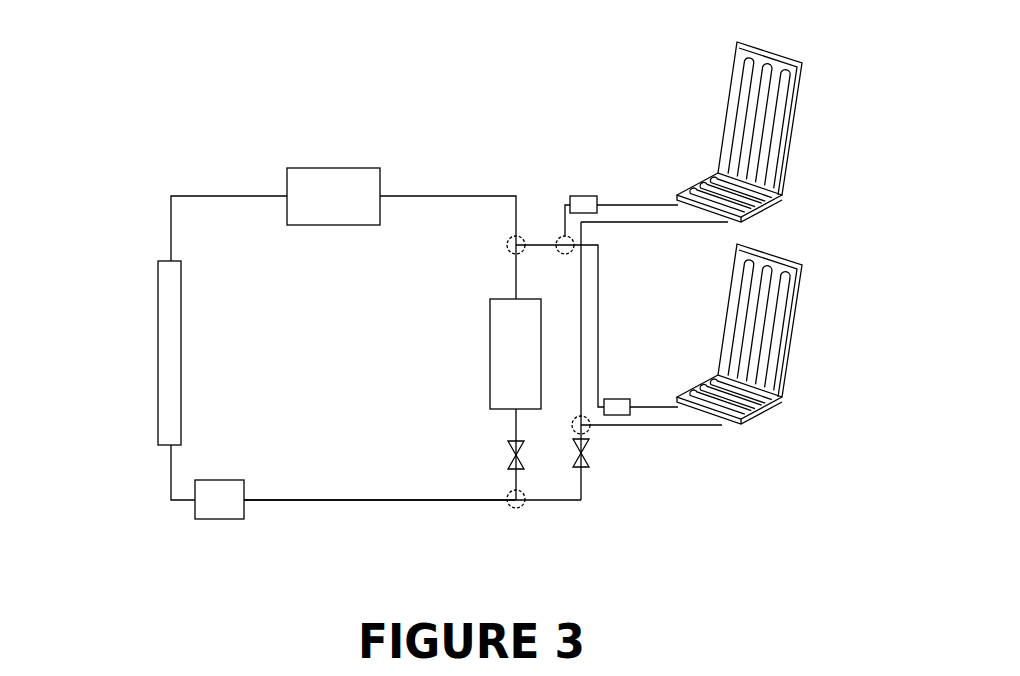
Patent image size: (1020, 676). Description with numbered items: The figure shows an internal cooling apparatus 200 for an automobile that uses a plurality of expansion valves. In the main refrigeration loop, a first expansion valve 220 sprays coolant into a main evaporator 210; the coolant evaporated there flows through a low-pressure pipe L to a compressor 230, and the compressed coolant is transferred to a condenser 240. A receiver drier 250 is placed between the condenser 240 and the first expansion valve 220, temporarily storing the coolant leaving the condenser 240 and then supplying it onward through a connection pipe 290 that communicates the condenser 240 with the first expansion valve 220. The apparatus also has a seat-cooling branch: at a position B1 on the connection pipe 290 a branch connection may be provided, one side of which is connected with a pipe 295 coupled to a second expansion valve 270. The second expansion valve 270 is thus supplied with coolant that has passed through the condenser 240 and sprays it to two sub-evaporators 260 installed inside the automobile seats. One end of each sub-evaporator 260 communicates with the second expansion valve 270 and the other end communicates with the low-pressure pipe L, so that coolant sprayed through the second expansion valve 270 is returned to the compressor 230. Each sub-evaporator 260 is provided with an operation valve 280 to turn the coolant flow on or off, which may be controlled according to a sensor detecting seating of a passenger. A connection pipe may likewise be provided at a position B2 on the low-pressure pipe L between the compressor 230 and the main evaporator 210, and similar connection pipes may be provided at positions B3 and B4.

The internal cooling apparatus 200 is at (444, 112).
The low-pressure pipe L is at (488, 194).
The compressor 230 is at (326, 167).
The condenser 240 is at (158, 268).
The receiver drier 250 is at (218, 519).
The connection pipe 290 is at (357, 500).
The main evaporator 210 is at (490, 345).
The first expansion valve 220 is at (522, 460).
The position B1 is at (505, 505).
The position B2 is at (507, 245).
The position B3 is at (563, 256).
The position B4 is at (592, 430).
The pipe 295 is at (585, 488).
The second expansion valve 270 is at (590, 455).
The operation valve 280 is at (590, 196).
The sub-evaporators 260 is at (790, 188).